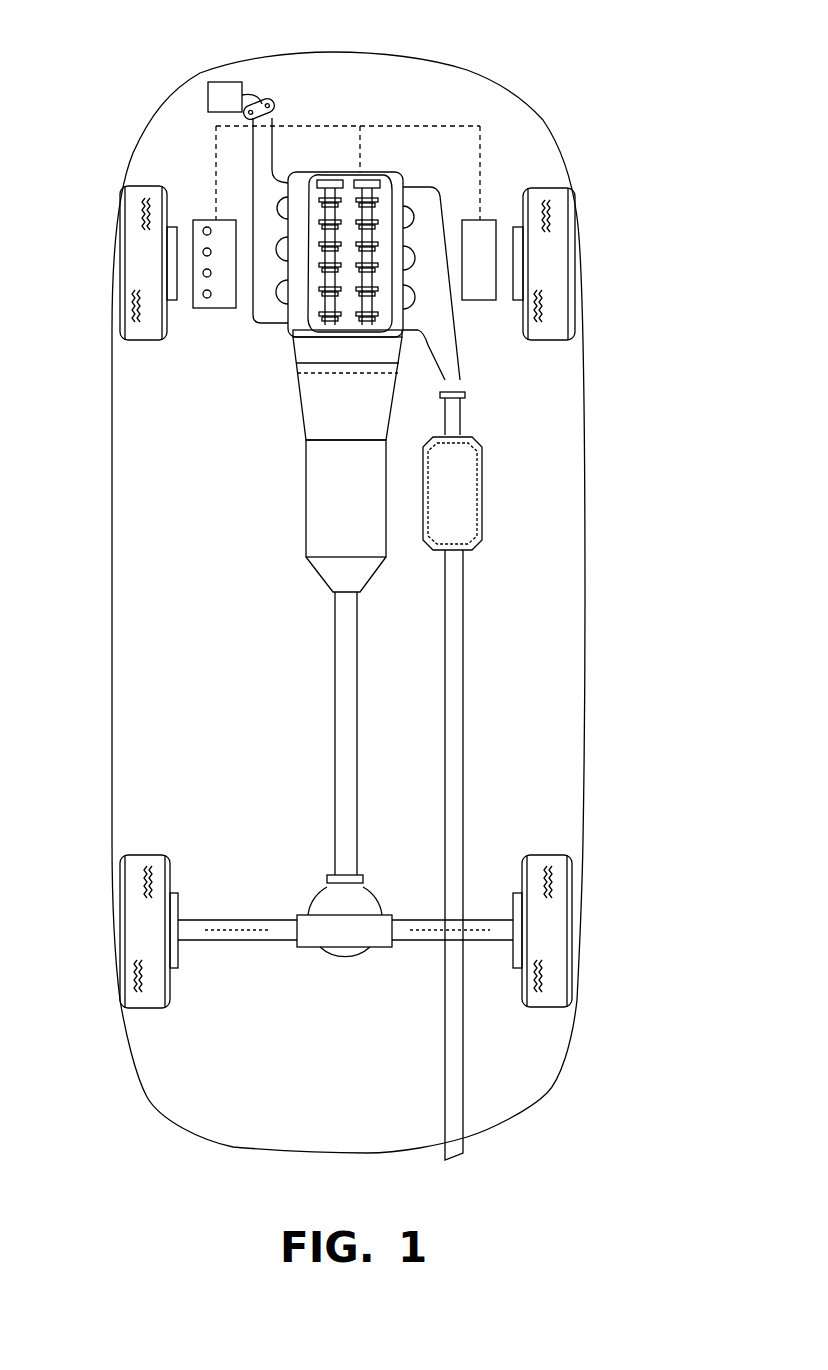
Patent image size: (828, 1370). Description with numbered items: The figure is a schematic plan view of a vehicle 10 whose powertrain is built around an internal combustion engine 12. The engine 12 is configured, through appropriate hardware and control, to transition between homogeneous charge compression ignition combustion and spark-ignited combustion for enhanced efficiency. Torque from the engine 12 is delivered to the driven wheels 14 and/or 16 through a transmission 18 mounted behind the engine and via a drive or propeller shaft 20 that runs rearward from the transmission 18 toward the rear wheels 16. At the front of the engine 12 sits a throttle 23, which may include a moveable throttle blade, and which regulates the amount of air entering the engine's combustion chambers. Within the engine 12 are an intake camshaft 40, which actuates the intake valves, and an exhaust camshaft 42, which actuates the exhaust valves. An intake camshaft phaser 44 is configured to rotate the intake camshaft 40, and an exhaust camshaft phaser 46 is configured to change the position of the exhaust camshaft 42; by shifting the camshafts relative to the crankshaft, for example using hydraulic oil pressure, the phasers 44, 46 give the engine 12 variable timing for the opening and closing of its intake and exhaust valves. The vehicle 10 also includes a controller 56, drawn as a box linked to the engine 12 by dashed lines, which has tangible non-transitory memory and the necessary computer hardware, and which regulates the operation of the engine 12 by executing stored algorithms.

The vehicle 10 is at (628, 108).
The internal combustion engine 12 is at (328, 226).
The driven wheels 14 is at (148, 259).
The driven wheels 16 is at (137, 932).
The transmission 18 is at (288, 465).
The propeller shaft 20 is at (345, 690).
The throttle 23 is at (265, 105).
The intake camshaft 40 is at (318, 237).
The exhaust camshaft 42 is at (370, 237).
The intake camshaft phaser 44 is at (332, 180).
The exhaust camshaft phaser 46 is at (367, 180).
The controller 56 is at (490, 271).